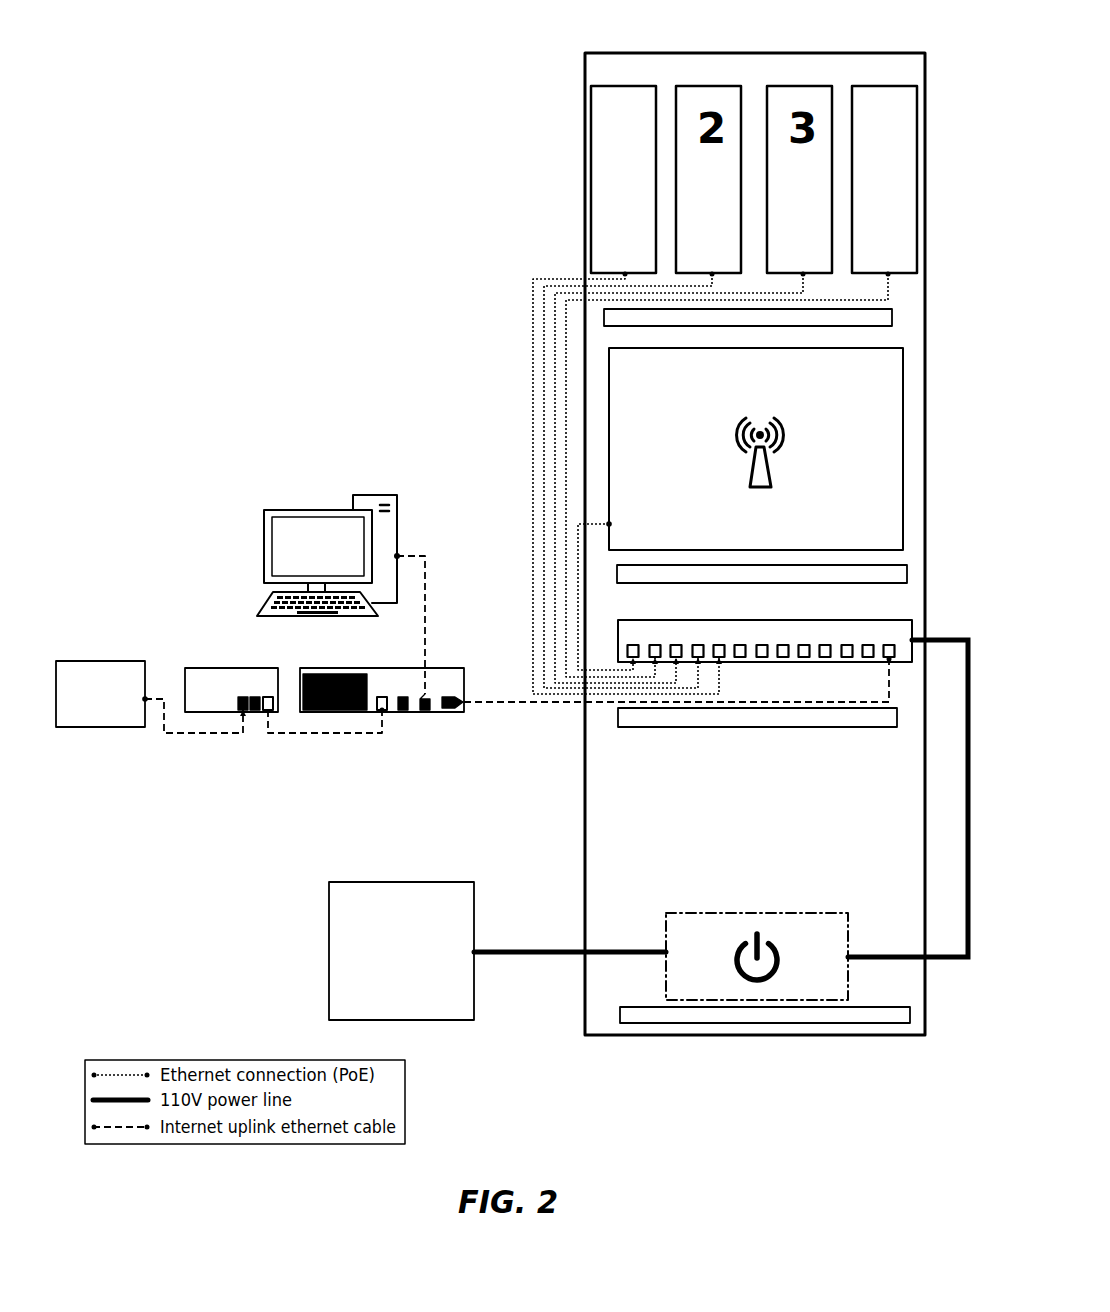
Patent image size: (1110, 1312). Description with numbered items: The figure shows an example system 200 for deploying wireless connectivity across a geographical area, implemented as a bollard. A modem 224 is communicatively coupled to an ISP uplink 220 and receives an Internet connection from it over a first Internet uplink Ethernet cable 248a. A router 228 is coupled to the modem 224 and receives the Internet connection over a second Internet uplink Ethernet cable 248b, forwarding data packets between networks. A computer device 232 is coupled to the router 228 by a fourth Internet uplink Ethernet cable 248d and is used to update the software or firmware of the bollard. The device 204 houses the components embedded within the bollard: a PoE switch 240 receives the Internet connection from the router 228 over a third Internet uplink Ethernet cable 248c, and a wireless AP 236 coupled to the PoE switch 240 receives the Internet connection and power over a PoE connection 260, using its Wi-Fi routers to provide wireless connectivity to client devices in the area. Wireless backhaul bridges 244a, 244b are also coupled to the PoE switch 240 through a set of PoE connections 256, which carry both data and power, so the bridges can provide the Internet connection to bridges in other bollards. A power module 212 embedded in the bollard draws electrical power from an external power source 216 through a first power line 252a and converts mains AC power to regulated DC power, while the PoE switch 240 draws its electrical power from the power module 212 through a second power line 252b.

The system 200 is at (226, 96).
The device 204 is at (848, 53).
The power module 212 is at (745, 913).
The external power source 216 is at (415, 960).
The ISP uplink 220 is at (115, 701).
The modem 224 is at (233, 668).
The router 228 is at (435, 712).
The computer device 232 is at (305, 510).
The wireless AP 236 is at (903, 446).
The PoE switch 240 is at (895, 620).
The wireless backhaul bridge 244a is at (600, 170).
The wireless backhaul bridge 244b is at (908, 165).
The first Internet uplink Ethernet cable 248a is at (200, 733).
The second Internet uplink Ethernet cable 248b is at (342, 733).
The third Internet uplink Ethernet cable 248c is at (525, 703).
The fourth Internet uplink Ethernet cable 248d is at (425, 612).
The first power line 252a is at (558, 952).
The second power line 252b is at (1040, 1045).
The set of PoE connections 256 is at (533, 412).
The PoE connection 260 is at (578, 558).